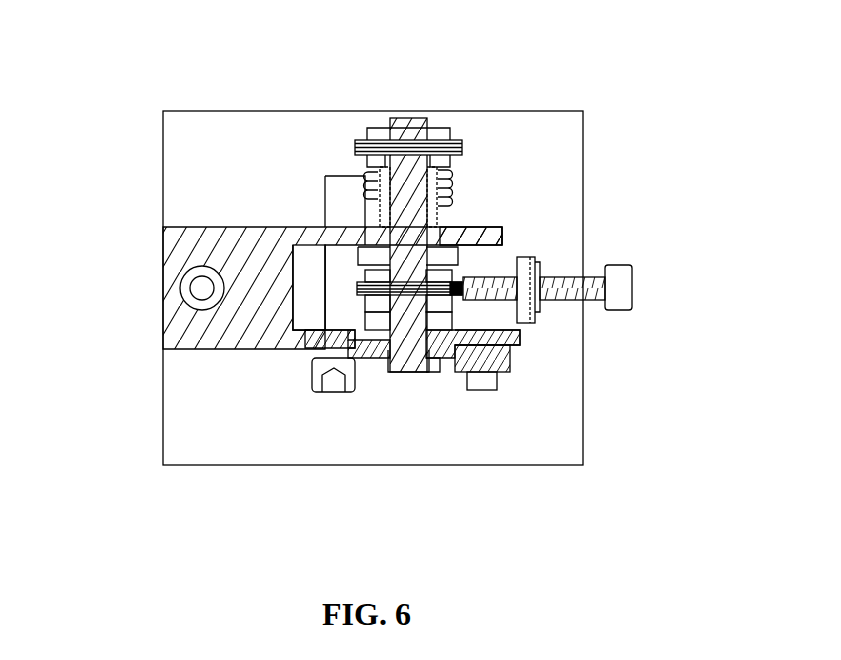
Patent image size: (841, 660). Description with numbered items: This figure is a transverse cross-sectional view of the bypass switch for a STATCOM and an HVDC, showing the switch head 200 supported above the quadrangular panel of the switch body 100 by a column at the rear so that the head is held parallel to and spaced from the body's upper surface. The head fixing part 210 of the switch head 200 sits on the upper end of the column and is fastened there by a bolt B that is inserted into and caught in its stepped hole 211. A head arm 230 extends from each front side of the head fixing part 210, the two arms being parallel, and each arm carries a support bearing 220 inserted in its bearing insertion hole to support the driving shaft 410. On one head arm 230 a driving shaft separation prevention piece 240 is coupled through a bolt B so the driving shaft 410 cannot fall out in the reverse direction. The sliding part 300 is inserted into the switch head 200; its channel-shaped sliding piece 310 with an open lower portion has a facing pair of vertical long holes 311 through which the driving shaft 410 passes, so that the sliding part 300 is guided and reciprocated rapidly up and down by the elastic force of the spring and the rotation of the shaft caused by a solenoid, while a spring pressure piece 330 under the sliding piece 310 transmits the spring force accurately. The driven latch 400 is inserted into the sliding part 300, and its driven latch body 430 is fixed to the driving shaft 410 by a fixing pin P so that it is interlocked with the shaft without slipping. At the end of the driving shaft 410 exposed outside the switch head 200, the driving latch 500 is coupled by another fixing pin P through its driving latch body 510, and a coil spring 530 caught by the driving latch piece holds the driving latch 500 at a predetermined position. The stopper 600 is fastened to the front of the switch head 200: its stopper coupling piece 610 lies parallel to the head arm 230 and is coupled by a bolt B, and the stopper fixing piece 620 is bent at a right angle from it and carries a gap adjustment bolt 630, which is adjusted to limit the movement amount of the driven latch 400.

The switch body 100 is at (190, 448).
The switch head 200 is at (184, 216).
The head fixing part 210 is at (195, 328).
The stepped hole 211 is at (180, 277).
The support bearing 220 is at (494, 232).
The head arm 230 is at (500, 228).
The driving shaft separation prevention piece 240 is at (370, 364).
The sliding part 300 is at (300, 346).
The sliding piece 310 is at (470, 376).
The vertical long hole 311 is at (447, 352).
The spring pressure piece 330 is at (337, 213).
The driven latch 400 is at (579, 274).
The driving shaft 410 is at (413, 122).
The driven latch body 430 is at (485, 322).
The driving latch 500 is at (442, 112).
The driving latch body 510 is at (383, 126).
The coil spring 530 is at (376, 188).
The stopper 600 is at (521, 232).
The stopper coupling piece 610 is at (505, 368).
The stopper fixing piece 620 is at (535, 262).
The gap adjustment bolt 630 is at (482, 300).
The fixing pin P is at (360, 140).
The bolt B is at (200, 286).